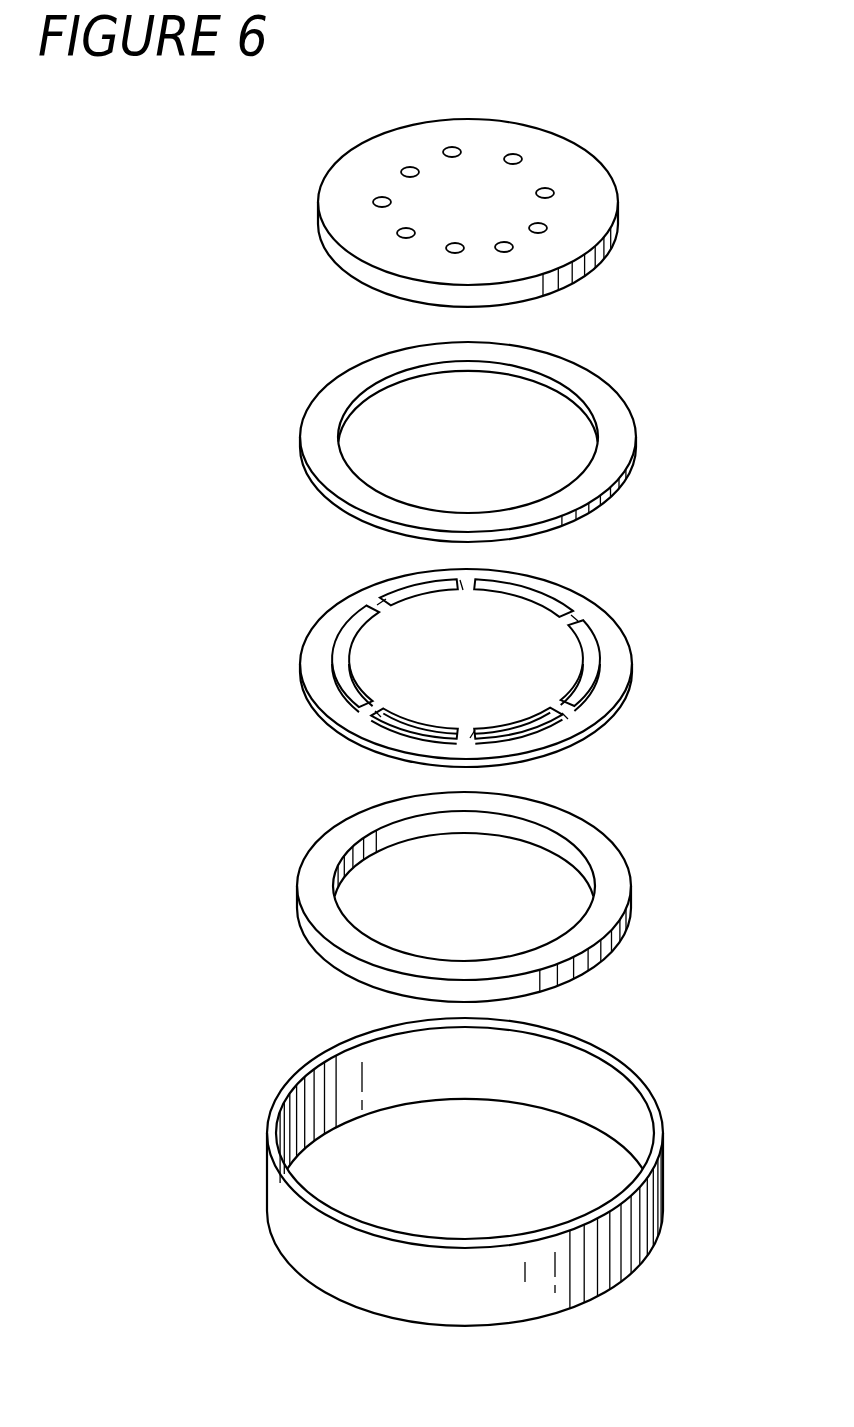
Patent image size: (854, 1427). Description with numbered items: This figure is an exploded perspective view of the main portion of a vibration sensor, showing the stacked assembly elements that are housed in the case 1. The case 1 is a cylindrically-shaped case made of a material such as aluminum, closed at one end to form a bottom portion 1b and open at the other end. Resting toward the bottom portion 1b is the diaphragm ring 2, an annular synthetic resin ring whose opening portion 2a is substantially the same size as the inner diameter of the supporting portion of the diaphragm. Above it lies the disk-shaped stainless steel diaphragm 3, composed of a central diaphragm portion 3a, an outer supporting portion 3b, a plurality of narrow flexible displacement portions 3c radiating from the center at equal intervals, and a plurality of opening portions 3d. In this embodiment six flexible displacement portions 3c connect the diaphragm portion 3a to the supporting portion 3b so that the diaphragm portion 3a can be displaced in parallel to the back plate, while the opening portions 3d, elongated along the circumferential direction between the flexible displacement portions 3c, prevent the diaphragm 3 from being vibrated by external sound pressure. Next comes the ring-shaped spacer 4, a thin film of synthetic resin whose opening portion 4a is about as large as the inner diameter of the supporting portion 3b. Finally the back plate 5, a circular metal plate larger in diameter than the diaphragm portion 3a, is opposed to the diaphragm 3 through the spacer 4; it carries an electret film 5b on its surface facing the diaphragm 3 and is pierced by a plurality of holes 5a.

The case 1 is at (497, 1172).
The bottom portion 1b is at (540, 1147).
The diaphragm ring 2 is at (508, 897).
The opening portion 2a is at (580, 935).
The diaphragm 3 is at (482, 662).
The diaphragm portion 3a is at (503, 655).
The supporting portion 3b is at (595, 618).
The flexible displacement portions 3c is at (573, 618).
The opening portions 3d is at (343, 640).
The spacer 4 is at (516, 442).
The opening portion 4a is at (578, 478).
The back plate 5 is at (502, 199).
The holes 5a is at (514, 153).
The electret film 5b is at (553, 298).